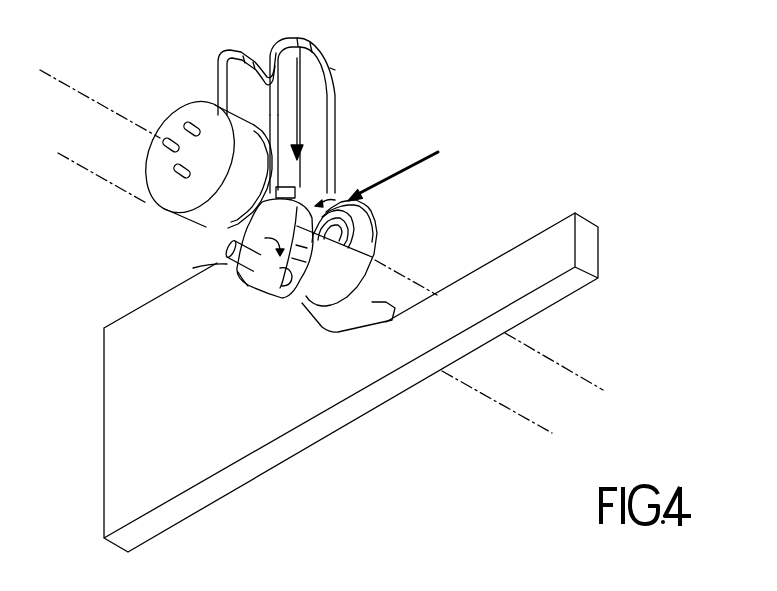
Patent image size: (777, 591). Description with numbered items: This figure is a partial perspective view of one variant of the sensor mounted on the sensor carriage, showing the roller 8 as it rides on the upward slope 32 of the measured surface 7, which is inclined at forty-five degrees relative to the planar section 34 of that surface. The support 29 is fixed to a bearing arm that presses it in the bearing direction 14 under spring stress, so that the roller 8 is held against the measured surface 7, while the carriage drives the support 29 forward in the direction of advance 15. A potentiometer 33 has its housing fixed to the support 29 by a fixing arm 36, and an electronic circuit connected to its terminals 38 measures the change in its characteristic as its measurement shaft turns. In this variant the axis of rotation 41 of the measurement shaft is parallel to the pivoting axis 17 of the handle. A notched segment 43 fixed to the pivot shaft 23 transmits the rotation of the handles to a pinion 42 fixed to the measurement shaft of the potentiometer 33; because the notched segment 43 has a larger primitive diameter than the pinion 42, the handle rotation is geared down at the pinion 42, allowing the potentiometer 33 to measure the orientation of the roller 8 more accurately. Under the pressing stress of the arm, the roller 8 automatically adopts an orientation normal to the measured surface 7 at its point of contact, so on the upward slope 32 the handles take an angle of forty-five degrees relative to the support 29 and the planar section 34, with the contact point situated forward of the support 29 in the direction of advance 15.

The measured surface 7 is at (528, 240).
The planar section 34 is at (478, 266).
The potentiometer 33 is at (160, 200).
The terminals 38 is at (184, 124).
The fixing arm 36 is at (226, 52).
The support 29 is at (334, 111).
The bearing direction 14 is at (300, 84).
The pinion 42 is at (283, 190).
The notched segment 43 is at (372, 247).
The roller 8 is at (378, 236).
The pivot shaft 23 is at (226, 246).
The direction of advance 15 is at (420, 153).
The upward slope 32 is at (320, 320).
The axis of rotation 41 is at (585, 368).
The pivoting axis 17 is at (528, 422).